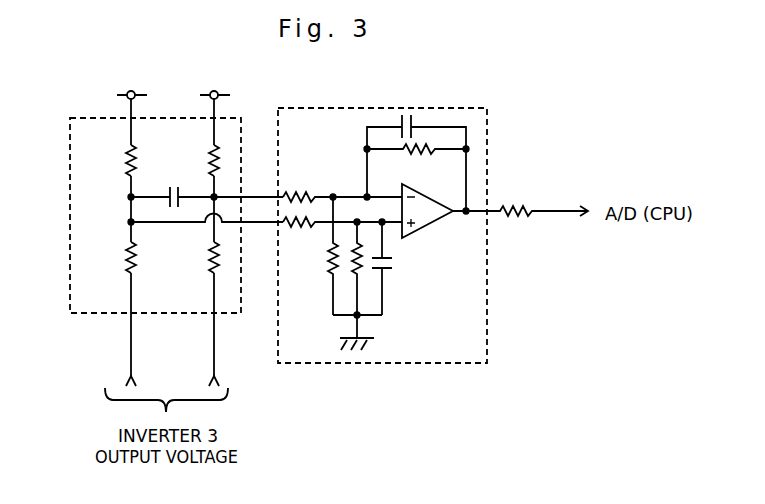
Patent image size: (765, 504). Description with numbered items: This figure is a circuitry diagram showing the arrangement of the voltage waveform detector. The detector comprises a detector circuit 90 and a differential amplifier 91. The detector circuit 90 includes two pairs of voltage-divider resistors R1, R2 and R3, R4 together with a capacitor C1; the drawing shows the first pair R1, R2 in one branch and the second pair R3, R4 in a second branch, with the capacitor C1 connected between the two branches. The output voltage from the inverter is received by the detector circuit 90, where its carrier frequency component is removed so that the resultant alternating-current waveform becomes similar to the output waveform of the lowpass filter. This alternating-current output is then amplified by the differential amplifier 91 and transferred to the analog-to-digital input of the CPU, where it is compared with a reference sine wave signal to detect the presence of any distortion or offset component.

The detector circuit 90 is at (134, 242).
The differential amplifier 91 is at (435, 363).
The voltage-divider resistor R1 is at (112, 257).
The voltage-divider resistor R2 is at (112, 152).
The voltage-divider resistor R3 is at (195, 257).
The voltage-divider resistor R4 is at (195, 152).
The capacitor C1 is at (172, 186).